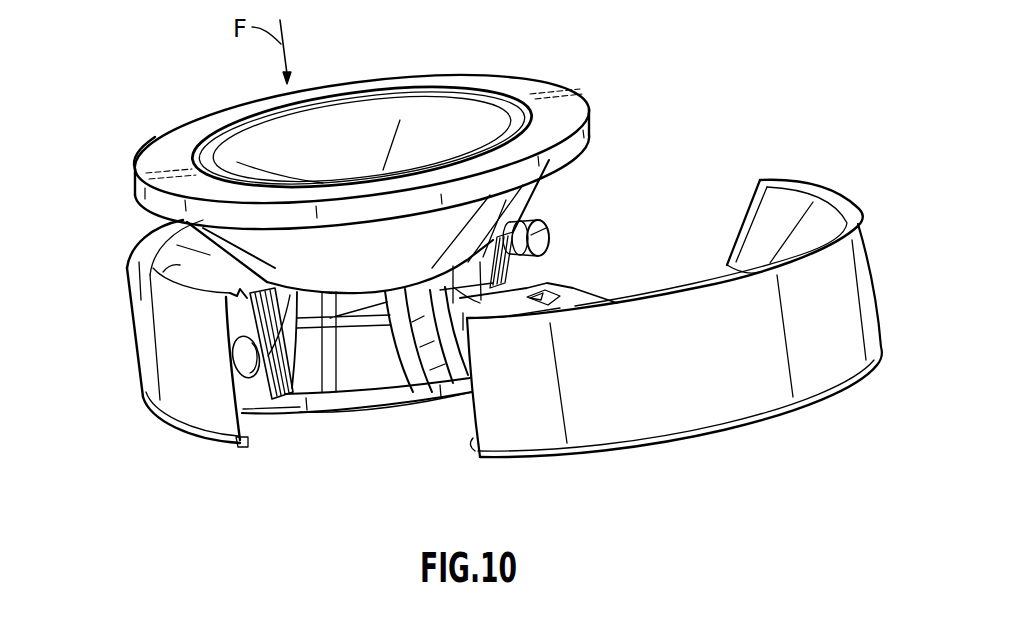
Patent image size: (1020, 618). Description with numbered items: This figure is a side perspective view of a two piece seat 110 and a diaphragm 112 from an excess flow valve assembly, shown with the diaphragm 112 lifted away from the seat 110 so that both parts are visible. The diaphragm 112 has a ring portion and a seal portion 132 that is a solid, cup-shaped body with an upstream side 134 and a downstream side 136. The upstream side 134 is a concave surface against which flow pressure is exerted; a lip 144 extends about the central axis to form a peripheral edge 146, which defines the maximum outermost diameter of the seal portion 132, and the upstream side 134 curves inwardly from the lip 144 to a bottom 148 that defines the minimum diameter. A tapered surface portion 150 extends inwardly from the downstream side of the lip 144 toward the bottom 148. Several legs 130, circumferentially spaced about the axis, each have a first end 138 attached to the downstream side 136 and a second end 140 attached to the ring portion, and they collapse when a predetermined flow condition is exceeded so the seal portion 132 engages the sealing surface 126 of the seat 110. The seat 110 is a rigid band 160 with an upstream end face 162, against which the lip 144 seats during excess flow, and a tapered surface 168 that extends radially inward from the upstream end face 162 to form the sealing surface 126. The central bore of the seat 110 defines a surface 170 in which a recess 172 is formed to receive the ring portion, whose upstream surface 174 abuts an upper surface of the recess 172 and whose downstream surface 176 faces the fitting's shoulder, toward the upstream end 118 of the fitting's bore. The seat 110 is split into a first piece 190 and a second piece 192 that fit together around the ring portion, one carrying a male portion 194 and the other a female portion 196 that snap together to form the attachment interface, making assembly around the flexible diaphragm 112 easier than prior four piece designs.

The seat 110 is at (809, 165).
The diaphragm 112 is at (614, 94).
The upstream end 118 is at (380, 410).
The sealing surface 126 is at (142, 313).
The legs 130 is at (584, 286).
The seal portion 132 is at (437, 126).
The upstream side 134 is at (333, 93).
The downstream side 136 is at (351, 338).
The first end 138 is at (538, 231).
The second end 140 is at (433, 393).
The lip 144 is at (137, 198).
The peripheral edge 146 is at (137, 172).
The bottom 148 is at (338, 403).
The tapered surface portion 150 is at (150, 231).
The band 160 is at (475, 440).
The upstream end face 162 is at (143, 347).
The tapered surface 168 is at (232, 328).
The surface 170 is at (233, 408).
The recess 172 is at (274, 412).
The upstream surface 174 is at (553, 288).
The downstream surface 176 is at (360, 412).
The first piece 190 is at (133, 273).
The second piece 192 is at (810, 387).
The male portion 194 is at (549, 217).
The female portion 196 is at (233, 381).